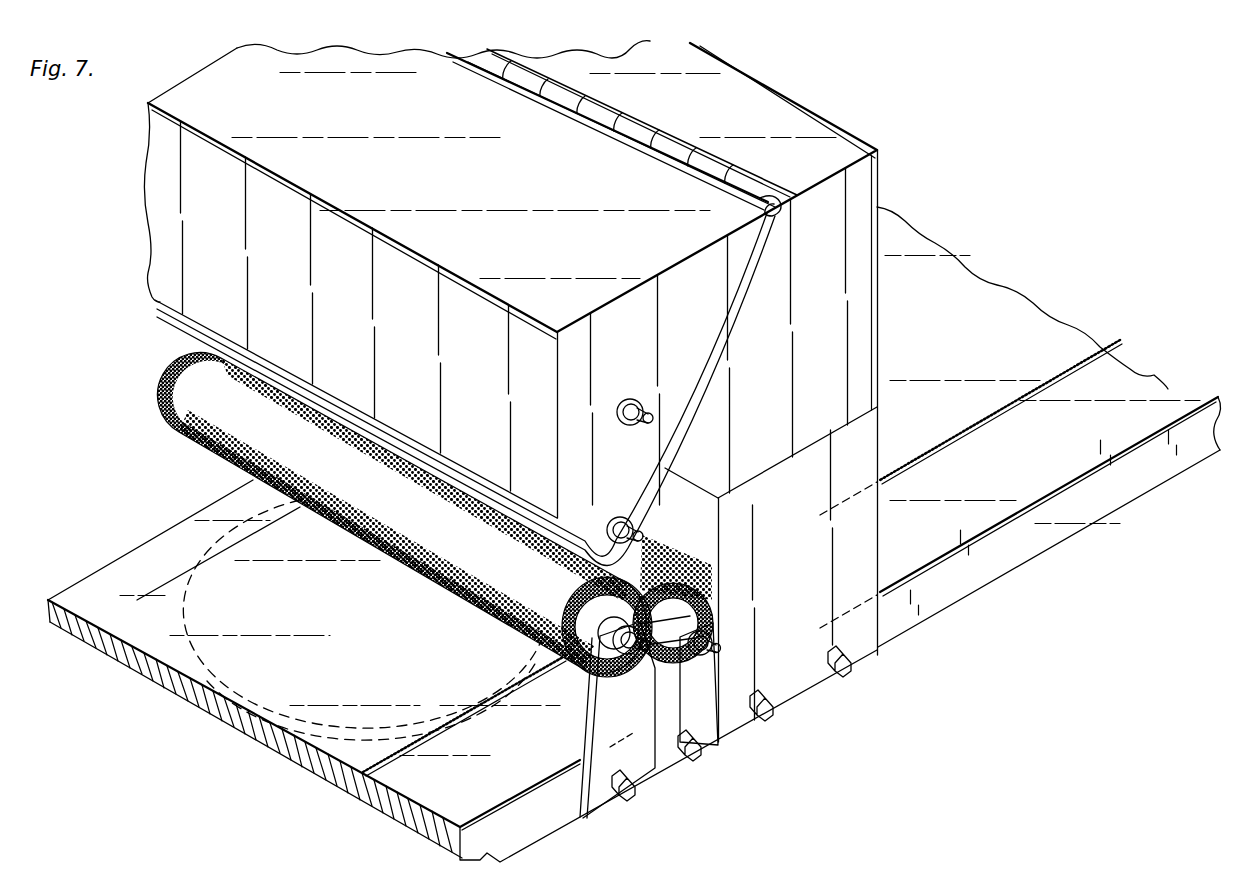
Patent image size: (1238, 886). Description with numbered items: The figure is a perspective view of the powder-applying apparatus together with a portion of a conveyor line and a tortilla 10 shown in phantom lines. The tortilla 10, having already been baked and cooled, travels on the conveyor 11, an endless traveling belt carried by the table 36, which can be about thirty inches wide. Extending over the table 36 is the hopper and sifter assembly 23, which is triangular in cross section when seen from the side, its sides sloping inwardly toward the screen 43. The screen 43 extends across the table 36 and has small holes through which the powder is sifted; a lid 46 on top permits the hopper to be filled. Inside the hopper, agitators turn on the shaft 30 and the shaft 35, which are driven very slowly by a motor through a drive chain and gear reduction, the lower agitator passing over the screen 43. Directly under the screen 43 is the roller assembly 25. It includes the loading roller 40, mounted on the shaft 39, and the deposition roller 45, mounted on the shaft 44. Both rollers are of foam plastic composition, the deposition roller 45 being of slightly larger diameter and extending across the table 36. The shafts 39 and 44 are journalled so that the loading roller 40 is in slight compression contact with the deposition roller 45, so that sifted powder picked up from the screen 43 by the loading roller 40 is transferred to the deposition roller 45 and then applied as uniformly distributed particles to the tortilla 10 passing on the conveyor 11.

The tortilla 10 is at (213, 533).
The conveyor 11 is at (1054, 308).
The hopper and sifter assembly 23 is at (160, 192).
The roller assembly 25 is at (662, 572).
The shaft 30 is at (653, 406).
The shaft 35 is at (646, 506).
The table 36 is at (1168, 378).
The shaft 39 is at (618, 655).
The loading roller 40 is at (176, 418).
The screen 43 is at (402, 455).
The shaft 44 is at (703, 656).
The deposition roller 45 is at (705, 580).
The lid 46 is at (198, 90).